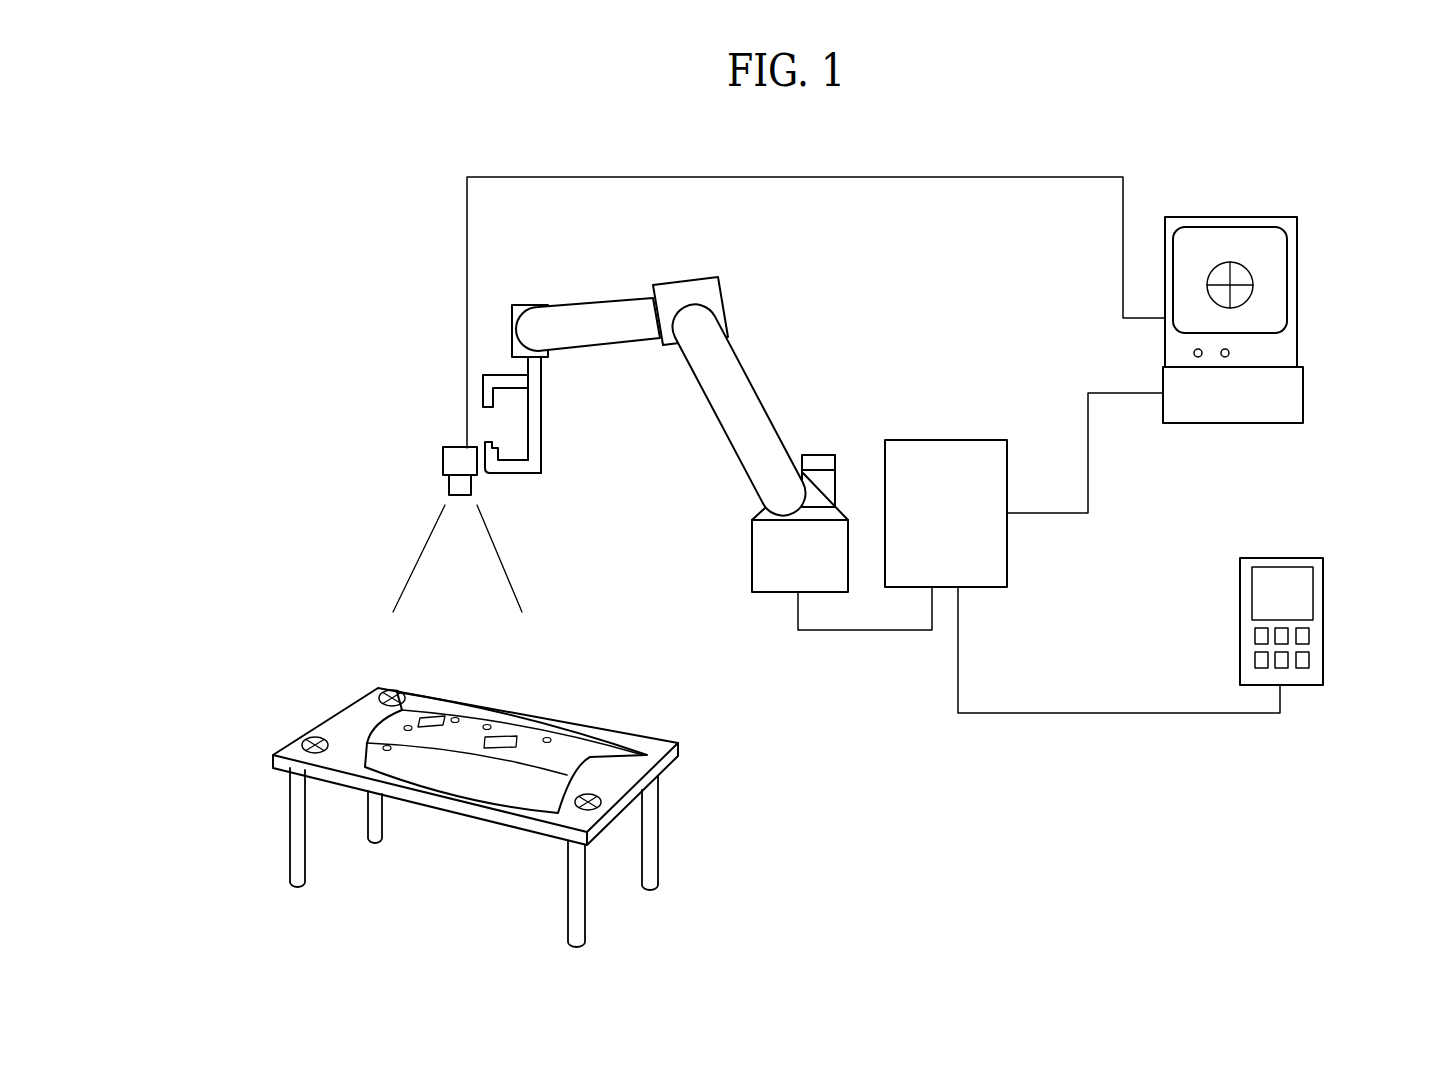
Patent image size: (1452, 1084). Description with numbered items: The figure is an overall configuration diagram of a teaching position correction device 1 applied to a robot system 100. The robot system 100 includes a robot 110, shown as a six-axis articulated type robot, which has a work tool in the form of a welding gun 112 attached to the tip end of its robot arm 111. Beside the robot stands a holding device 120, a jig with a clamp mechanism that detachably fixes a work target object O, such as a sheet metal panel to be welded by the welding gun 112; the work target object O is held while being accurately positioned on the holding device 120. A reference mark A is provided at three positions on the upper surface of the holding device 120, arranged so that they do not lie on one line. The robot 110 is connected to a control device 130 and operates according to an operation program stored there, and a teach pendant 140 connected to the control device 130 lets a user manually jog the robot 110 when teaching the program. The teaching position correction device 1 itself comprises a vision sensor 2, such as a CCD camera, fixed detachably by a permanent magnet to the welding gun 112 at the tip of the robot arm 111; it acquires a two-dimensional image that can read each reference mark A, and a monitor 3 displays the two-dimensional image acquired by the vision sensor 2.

The robot system 100 is at (216, 232).
The teaching position correction device 1 is at (1276, 267).
The monitor 3 is at (1227, 226).
The vision sensor 2 is at (443, 458).
The robot 110 is at (665, 400).
The robot arm 111 is at (600, 302).
The welding gun 112 is at (523, 476).
The holding device 120 is at (527, 781).
The control device 130 is at (961, 401).
The teach pendant 140 is at (1339, 565).
The reference mark A is at (315, 740).
The work target object O is at (470, 725).